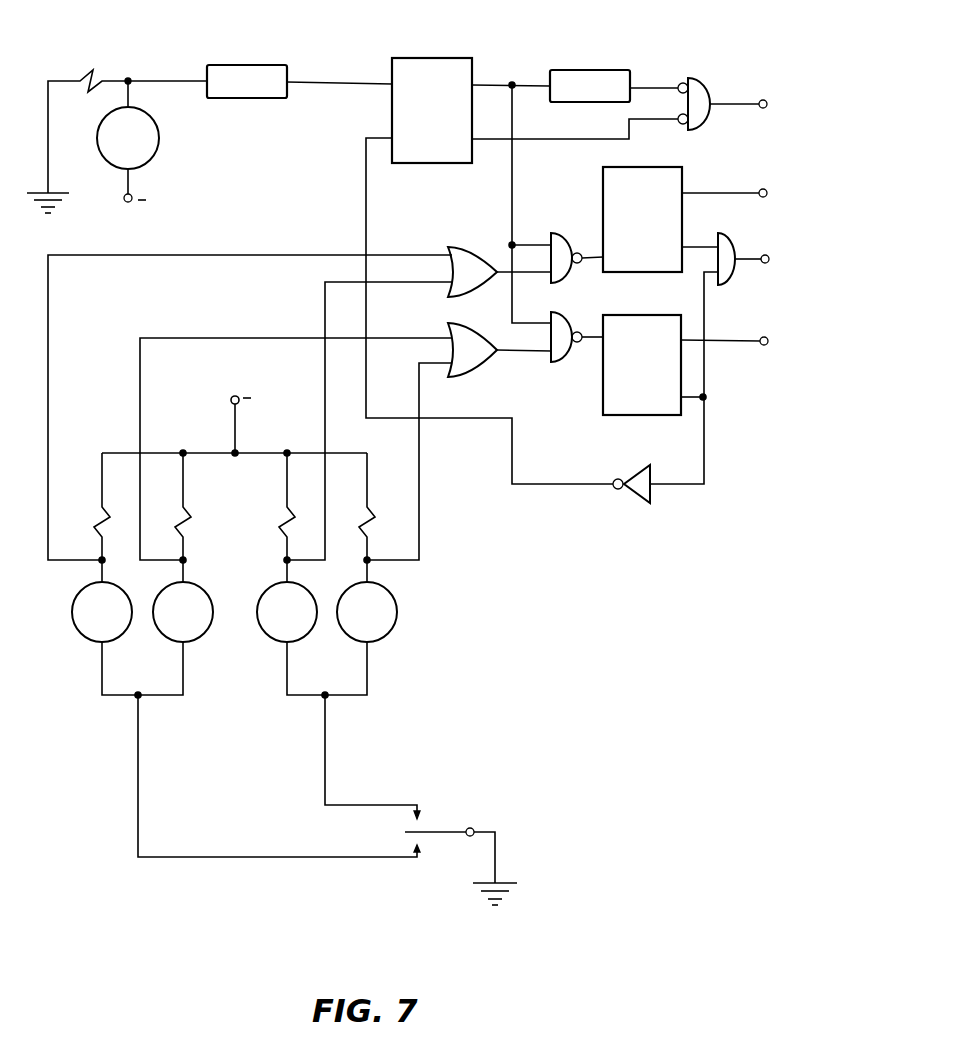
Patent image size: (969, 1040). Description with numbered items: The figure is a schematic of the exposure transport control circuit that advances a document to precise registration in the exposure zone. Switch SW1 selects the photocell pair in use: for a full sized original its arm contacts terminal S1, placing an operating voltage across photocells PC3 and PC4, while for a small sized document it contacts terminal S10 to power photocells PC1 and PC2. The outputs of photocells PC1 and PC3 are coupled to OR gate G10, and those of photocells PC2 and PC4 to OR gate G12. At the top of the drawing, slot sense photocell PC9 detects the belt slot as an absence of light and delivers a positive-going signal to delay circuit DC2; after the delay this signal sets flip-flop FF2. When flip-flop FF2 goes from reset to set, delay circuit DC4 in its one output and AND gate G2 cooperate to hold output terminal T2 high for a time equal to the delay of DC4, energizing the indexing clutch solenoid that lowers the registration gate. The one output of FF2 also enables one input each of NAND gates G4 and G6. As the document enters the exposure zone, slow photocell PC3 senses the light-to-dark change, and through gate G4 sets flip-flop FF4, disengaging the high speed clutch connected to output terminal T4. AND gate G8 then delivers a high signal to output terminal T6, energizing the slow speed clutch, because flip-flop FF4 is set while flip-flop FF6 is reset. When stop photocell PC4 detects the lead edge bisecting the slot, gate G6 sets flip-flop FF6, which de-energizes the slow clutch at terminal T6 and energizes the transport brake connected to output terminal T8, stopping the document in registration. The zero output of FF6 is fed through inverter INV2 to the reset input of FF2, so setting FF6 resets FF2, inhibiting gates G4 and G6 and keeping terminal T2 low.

The slot sense photocell PC9 is at (128, 140).
The delay circuit DC2 is at (257, 65).
The flip-flop FF2 is at (430, 58).
The delay circuit DC4 is at (578, 70).
The AND gate G2 is at (718, 87).
The output terminal T2 is at (767, 123).
The flip-flop FF4 is at (603, 172).
The output terminal T4 is at (753, 180).
The NAND gate G4 is at (560, 245).
The AND gate G8 is at (731, 233).
The output terminal T6 is at (775, 249).
The NAND gate G6 is at (562, 362).
The flip-flop FF6 is at (645, 418).
The output terminal T8 is at (760, 354).
The inverter INV2 is at (638, 500).
The OR gate G10 is at (466, 247).
The OR gate G12 is at (477, 363).
The photocell PC1 is at (102, 612).
The photocell PC2 is at (183, 612).
The slow photocell PC3 is at (287, 612).
The stop photocell PC4 is at (367, 612).
The terminal S1 is at (385, 805).
The terminal S10 is at (388, 858).
The switch SW1 is at (457, 830).